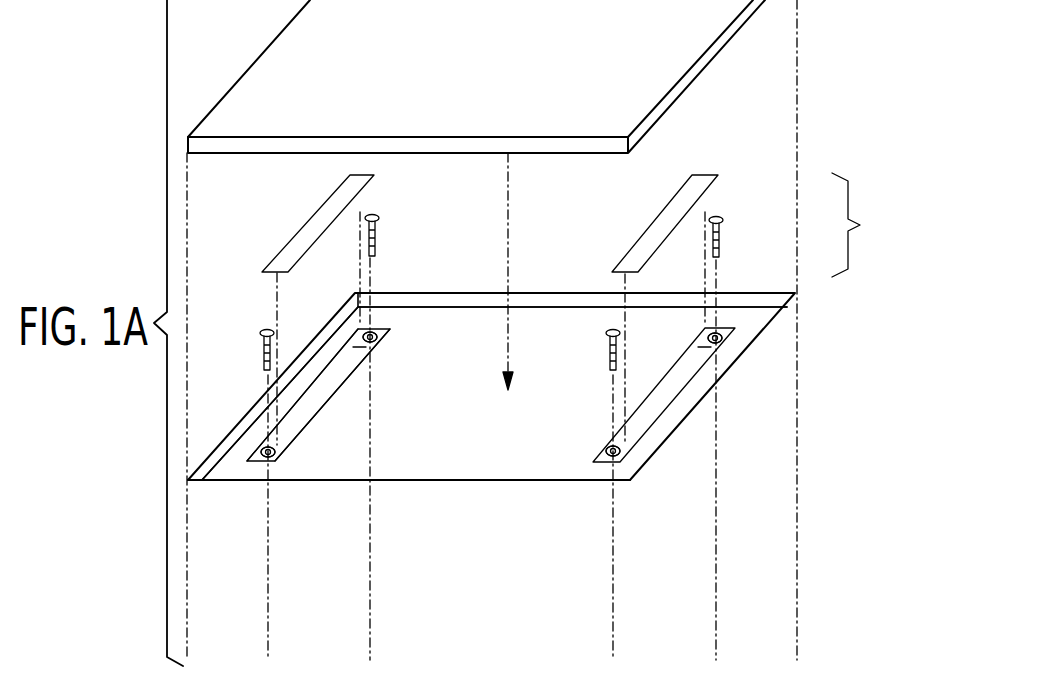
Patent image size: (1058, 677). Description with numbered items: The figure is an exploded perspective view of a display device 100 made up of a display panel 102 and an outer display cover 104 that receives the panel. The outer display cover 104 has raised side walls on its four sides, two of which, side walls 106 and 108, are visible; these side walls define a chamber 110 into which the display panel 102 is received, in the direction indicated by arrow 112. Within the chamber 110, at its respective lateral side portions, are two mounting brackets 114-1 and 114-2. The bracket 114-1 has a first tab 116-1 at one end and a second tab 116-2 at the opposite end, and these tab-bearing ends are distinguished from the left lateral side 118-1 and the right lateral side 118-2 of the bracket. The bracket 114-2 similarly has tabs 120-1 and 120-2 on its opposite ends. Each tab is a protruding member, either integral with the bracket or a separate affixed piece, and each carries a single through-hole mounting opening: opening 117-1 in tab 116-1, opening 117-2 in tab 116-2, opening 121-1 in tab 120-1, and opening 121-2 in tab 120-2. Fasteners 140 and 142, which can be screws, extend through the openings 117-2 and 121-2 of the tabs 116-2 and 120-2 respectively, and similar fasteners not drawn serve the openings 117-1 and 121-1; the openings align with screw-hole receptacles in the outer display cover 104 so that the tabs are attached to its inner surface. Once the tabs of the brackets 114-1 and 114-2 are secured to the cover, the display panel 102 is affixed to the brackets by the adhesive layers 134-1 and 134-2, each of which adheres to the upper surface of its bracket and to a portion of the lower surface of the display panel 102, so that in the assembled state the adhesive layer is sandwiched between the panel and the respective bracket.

The display device 100 is at (883, 225).
The display panel 102 is at (657, 43).
The outer display cover 104 is at (765, 328).
The side wall 106 is at (250, 428).
The side wall 108 is at (440, 305).
The chamber 110 is at (540, 333).
The arrow 112 is at (508, 197).
The mounting bracket 114-1 is at (327, 388).
The mounting bracket 114-2 is at (643, 417).
The first tab 116-1 is at (383, 338).
The second tab 116-2 is at (277, 452).
The mounting opening 117-1 is at (374, 333).
The mounting opening 117-2 is at (274, 456).
The lateral side 118-1 is at (338, 357).
The lateral side 118-2 is at (330, 403).
The tab 120-1 is at (723, 339).
The tab 120-2 is at (603, 450).
The mounting opening 121-1 is at (727, 342).
The mounting opening 121-2 is at (611, 458).
The adhesive layer 134-1 is at (303, 232).
The adhesive layer 134-2 is at (658, 238).
The fastener 140 is at (372, 213).
The fastener 142 is at (722, 240).